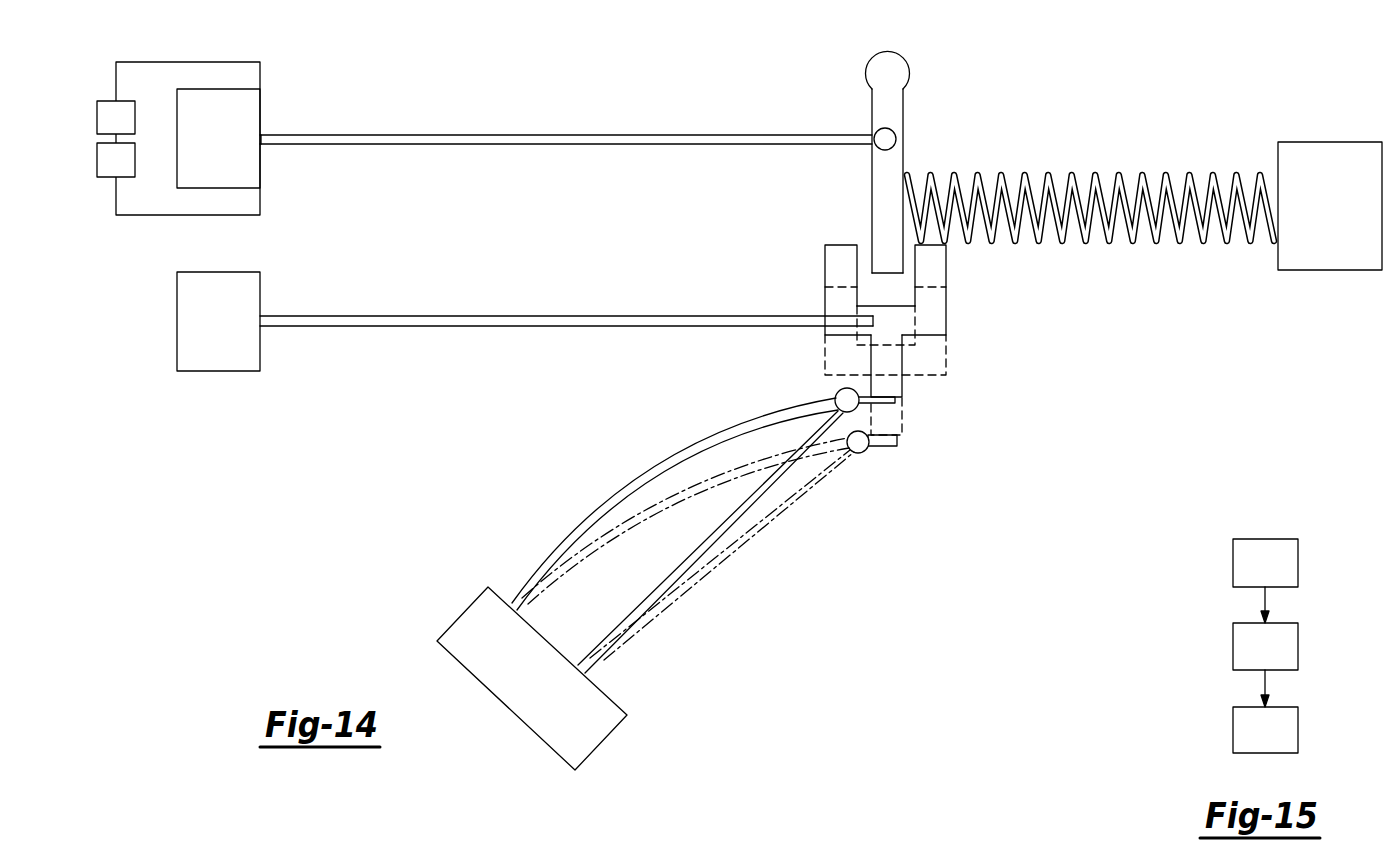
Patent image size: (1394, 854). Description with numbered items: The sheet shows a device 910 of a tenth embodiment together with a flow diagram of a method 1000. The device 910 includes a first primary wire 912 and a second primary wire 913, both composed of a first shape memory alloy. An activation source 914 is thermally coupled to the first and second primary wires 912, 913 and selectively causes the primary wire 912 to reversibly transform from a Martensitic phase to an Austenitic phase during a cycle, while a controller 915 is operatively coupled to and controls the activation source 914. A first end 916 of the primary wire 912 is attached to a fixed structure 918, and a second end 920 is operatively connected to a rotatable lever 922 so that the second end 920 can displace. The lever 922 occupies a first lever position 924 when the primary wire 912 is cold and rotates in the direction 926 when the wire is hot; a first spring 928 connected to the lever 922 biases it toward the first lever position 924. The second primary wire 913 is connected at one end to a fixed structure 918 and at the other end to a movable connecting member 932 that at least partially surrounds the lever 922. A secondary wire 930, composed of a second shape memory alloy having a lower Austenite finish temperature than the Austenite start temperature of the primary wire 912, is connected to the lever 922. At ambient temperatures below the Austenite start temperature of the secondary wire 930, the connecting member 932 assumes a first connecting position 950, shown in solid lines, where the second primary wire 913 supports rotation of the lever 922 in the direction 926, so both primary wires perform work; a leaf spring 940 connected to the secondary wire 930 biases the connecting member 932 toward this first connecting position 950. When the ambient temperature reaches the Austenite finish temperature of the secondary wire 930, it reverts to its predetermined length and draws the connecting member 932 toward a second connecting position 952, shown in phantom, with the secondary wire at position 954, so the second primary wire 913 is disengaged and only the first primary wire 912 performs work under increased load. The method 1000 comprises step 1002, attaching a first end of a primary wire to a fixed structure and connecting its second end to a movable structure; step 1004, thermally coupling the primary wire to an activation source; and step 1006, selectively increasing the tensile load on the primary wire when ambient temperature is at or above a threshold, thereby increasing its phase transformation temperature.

In FIG. 14, the device 910 is at (974, 152).
In FIG. 14, the first primary wire 912 is at (568, 135).
In FIG. 14, the second primary wire 913 is at (568, 316).
In FIG. 14, the activation source 914 is at (131, 130).
In FIG. 14, the controller 915 is at (131, 172).
In FIG. 14, the first end 916 is at (262, 132).
In FIG. 14, the fixed structure 918 is at (235, 148).
In FIG. 14, the second end 920 is at (877, 130).
In FIG. 14, the rotatable lever 922 is at (903, 100).
In FIG. 14, the first lever position 924 is at (903, 137).
In FIG. 14, the direction 926 is at (897, 342).
In FIG. 14, the first spring 928 is at (1192, 172).
In FIG. 14, the secondary wire 930 is at (640, 485).
In FIG. 14, the connecting member 932 is at (946, 268).
In FIG. 14, the leaf spring 940 is at (657, 585).
In FIG. 14, the first connecting position 950 is at (946, 283).
In FIG. 14, the second connecting position 952 is at (946, 358).
In FIG. 14, the position 954 is at (765, 523).
In FIG. 15, the method 1000 is at (1221, 631).
In FIG. 15, the step 1002 is at (1280, 574).
In FIG. 15, the step 1004 is at (1280, 658).
In FIG. 15, the step 1006 is at (1280, 742).